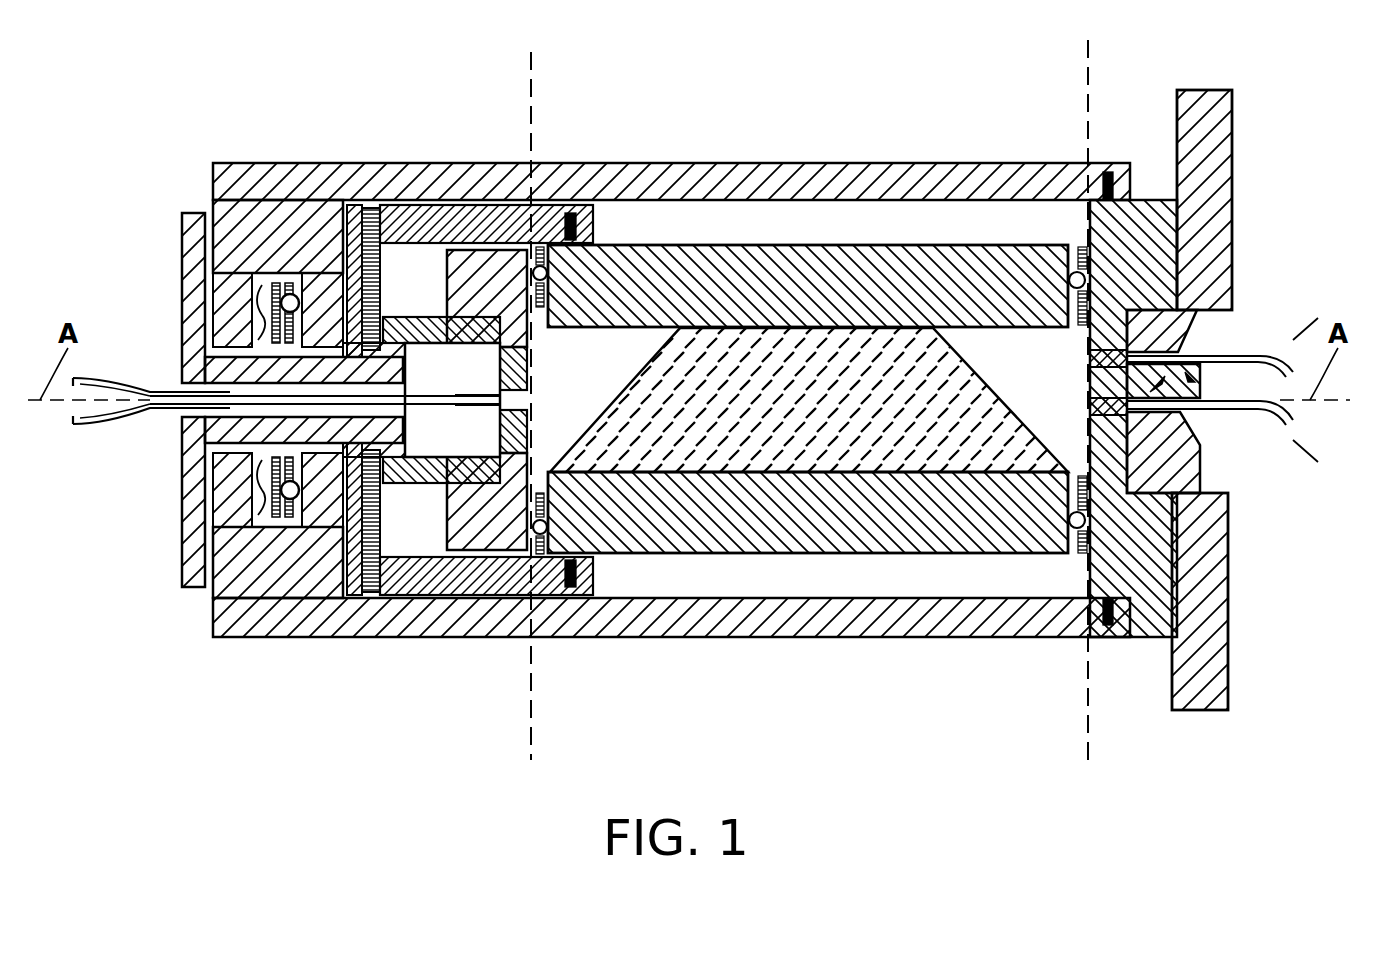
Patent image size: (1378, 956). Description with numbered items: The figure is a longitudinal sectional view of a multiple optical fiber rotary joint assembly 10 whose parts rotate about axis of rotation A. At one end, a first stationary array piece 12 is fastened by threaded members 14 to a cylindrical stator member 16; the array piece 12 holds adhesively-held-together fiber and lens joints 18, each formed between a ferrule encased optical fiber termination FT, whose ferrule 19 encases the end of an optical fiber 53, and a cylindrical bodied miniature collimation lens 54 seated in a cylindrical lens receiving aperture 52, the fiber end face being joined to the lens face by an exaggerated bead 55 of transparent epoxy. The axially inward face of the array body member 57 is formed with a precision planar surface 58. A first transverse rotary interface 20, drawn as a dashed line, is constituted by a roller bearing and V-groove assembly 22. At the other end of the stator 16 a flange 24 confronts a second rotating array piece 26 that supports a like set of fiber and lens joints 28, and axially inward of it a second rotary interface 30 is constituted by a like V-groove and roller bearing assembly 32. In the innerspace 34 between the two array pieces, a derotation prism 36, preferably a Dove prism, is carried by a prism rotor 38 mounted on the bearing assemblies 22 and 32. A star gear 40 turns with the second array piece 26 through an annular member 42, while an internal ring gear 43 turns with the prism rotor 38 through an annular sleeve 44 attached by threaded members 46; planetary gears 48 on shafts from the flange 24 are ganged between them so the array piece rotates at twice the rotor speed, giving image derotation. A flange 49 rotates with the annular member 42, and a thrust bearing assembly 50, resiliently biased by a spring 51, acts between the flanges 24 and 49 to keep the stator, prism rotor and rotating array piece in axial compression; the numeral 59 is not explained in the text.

The multiple optical fiber rotary joint assembly 10 is at (698, 650).
The first stationary array piece 12 is at (1132, 216).
The threaded members 14 is at (1135, 200).
The cylindrical stator member 16 is at (905, 172).
The fiber and lens joint 18 is at (1110, 268).
The ferrule 19 is at (1200, 444).
The first transverse rotary interface 20 is at (1084, 72).
The roller bearing and V-groove assembly 22 is at (1092, 516).
The flange 24 is at (193, 312).
The second rotating array piece 26 is at (441, 587).
The fiber and lens joints 28 is at (497, 448).
The second rotary interface 30 is at (547, 82).
The V-groove and roller bearing assembly 32 is at (481, 593).
The innerspace 34 is at (811, 593).
The derotation prism 36 is at (673, 370).
The prism rotor 38 is at (728, 262).
The star gear 40 is at (386, 317).
The annular member 42 is at (440, 250).
The internal ring gear 43 is at (335, 215).
The annular sleeve 44 is at (495, 214).
The threaded members 46 is at (600, 214).
The planetary gears 48 is at (381, 209).
The flange 49 is at (298, 292).
The thrust bearing assembly 50 is at (236, 281).
The spring 51 is at (235, 488).
The cylindrical lens receiving aperture 52 is at (1088, 442).
The optical fiber 53 is at (200, 391).
The cylindrical bodied miniature collimation lens 54 is at (1088, 400).
The bead of adhesive 55 is at (496, 393).
The body member 57 is at (560, 213).
The planar surface 58 is at (1053, 207).
The ball bearing 59 is at (1040, 250).
The ferrule encased optical fiber termination FT is at (1200, 382).